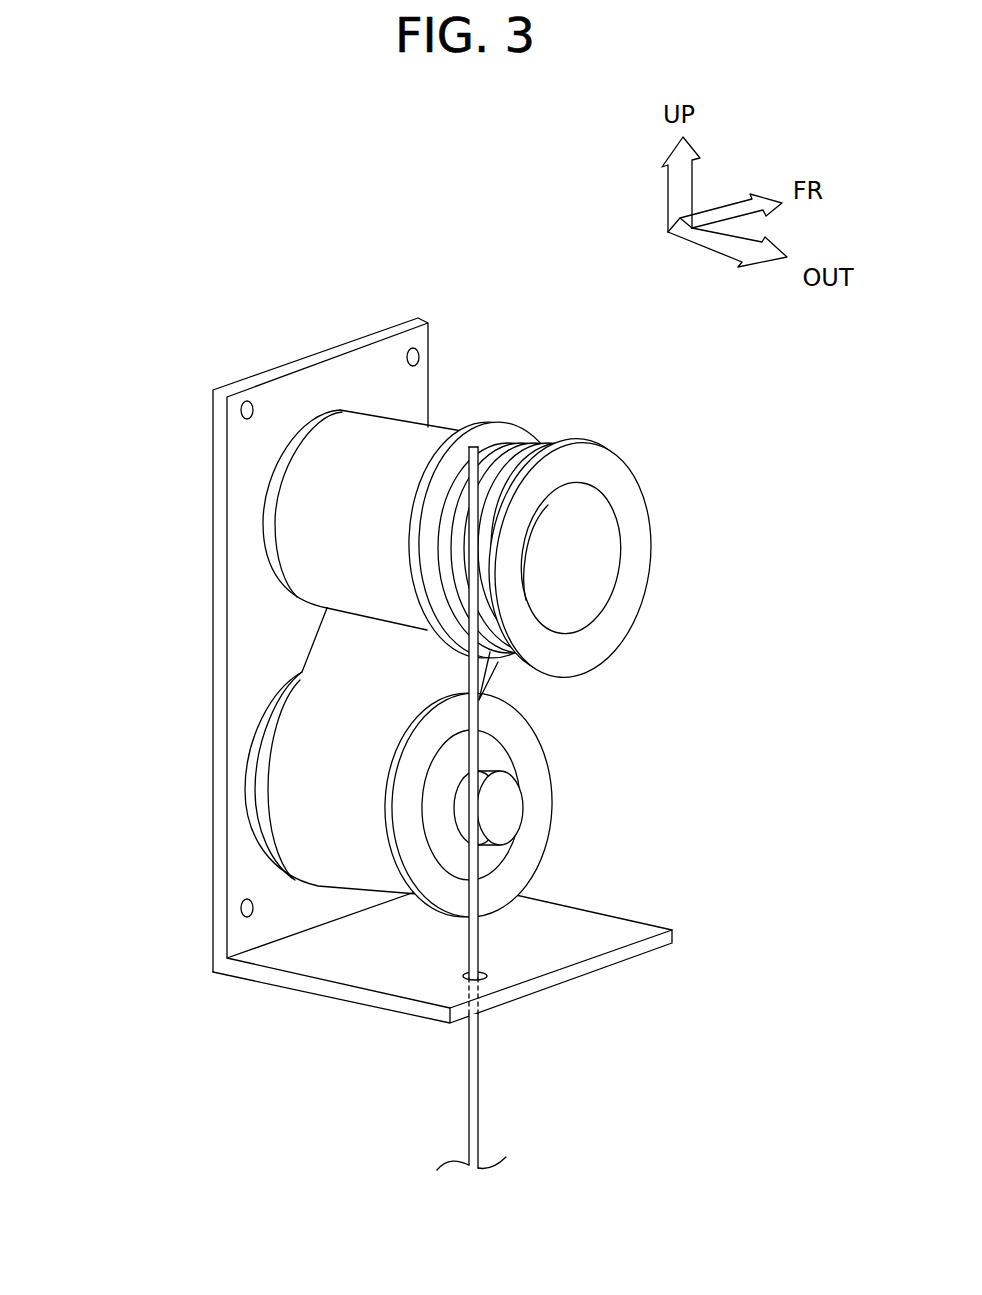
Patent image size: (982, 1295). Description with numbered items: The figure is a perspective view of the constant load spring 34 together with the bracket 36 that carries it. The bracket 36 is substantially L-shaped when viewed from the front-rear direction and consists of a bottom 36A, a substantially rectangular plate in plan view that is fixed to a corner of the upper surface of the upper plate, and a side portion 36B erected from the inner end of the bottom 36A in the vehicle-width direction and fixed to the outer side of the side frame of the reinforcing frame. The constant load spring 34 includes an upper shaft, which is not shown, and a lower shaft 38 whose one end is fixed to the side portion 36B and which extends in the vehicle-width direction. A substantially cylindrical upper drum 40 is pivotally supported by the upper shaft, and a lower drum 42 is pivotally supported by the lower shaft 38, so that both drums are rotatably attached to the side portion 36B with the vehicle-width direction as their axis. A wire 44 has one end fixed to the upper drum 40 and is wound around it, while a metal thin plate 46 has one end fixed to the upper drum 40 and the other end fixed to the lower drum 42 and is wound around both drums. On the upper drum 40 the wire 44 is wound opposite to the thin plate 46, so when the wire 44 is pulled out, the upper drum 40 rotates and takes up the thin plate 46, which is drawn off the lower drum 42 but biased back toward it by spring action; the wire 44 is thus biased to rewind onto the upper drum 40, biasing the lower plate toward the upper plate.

The constant load spring 34 is at (483, 254).
The bracket 36 is at (313, 346).
The bottom 36A is at (310, 993).
The side portion 36B is at (212, 735).
The lower shaft 38 is at (522, 810).
The upper drum 40 is at (649, 552).
The lower drum 42 is at (540, 738).
The wire 44 is at (481, 1067).
The thin plate 46 is at (315, 640).